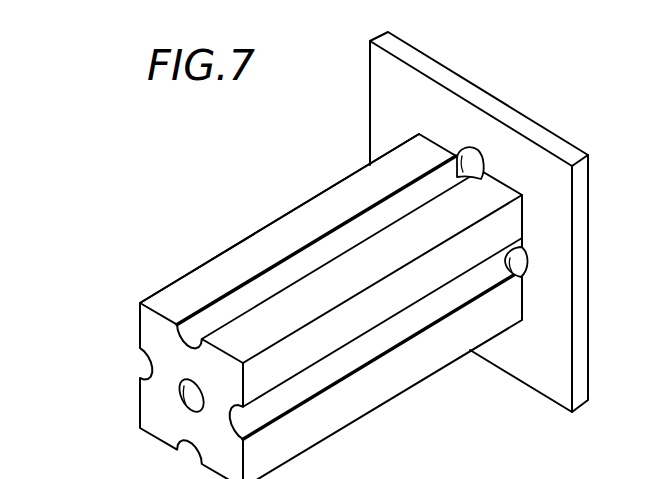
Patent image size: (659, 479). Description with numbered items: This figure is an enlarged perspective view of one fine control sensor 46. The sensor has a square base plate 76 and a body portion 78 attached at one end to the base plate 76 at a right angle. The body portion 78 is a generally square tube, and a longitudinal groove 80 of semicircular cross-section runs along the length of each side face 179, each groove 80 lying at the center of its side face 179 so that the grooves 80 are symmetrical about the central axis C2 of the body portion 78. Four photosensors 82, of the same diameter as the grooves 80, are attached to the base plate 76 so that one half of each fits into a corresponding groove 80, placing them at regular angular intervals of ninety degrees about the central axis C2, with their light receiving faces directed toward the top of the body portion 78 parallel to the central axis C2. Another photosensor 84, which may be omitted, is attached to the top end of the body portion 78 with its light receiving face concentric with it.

The base plate 76 is at (475, 93).
The fine control sensor 46 is at (357, 306).
The body portion 78 is at (210, 258).
The longitudinal groove 80 is at (335, 250).
The photosensor 82 is at (473, 165).
The side face 179 is at (162, 293).
The photosensor 84 is at (180, 403).
The central axis C2 is at (182, 406).